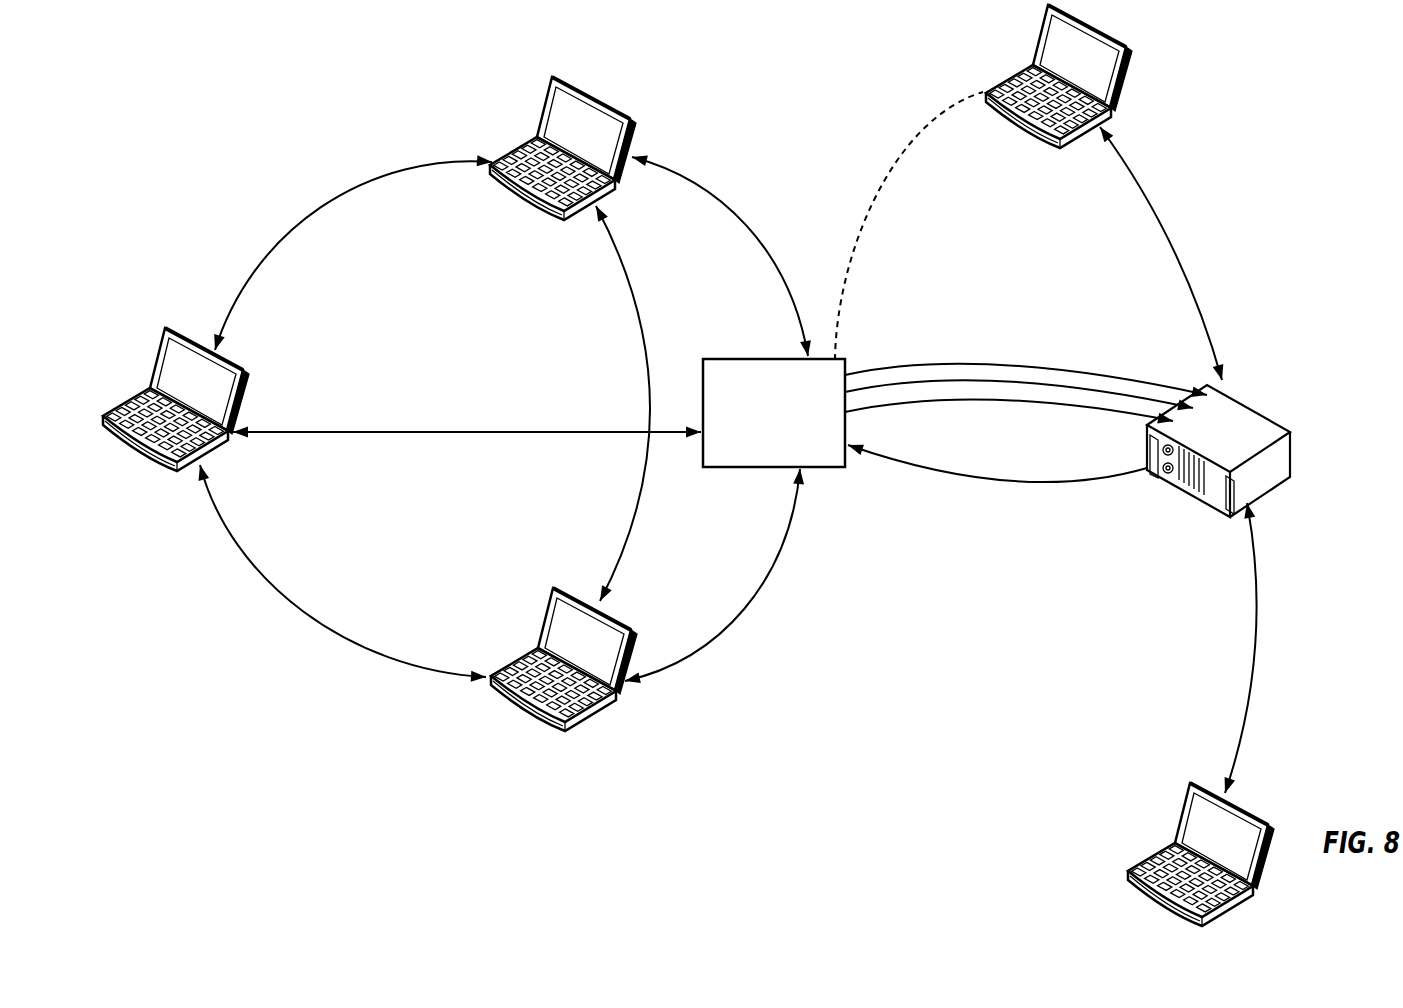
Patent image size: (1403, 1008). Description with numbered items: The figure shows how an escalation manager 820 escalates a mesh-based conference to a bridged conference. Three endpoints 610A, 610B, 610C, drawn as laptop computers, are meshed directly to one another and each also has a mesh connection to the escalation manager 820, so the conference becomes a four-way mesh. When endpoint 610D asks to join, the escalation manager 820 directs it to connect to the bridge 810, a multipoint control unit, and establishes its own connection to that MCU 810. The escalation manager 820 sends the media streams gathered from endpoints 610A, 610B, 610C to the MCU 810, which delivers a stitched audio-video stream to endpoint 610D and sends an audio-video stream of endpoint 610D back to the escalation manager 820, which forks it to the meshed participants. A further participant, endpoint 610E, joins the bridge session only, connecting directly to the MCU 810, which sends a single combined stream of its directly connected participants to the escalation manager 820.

The endpoint 610A is at (240, 392).
The endpoint 610B is at (520, 150).
The endpoint 610C is at (592, 722).
The endpoint 610D is at (1118, 90).
The endpoint 610E is at (1267, 825).
The bridge 810 is at (1263, 415).
The escalation manager 820 is at (820, 467).